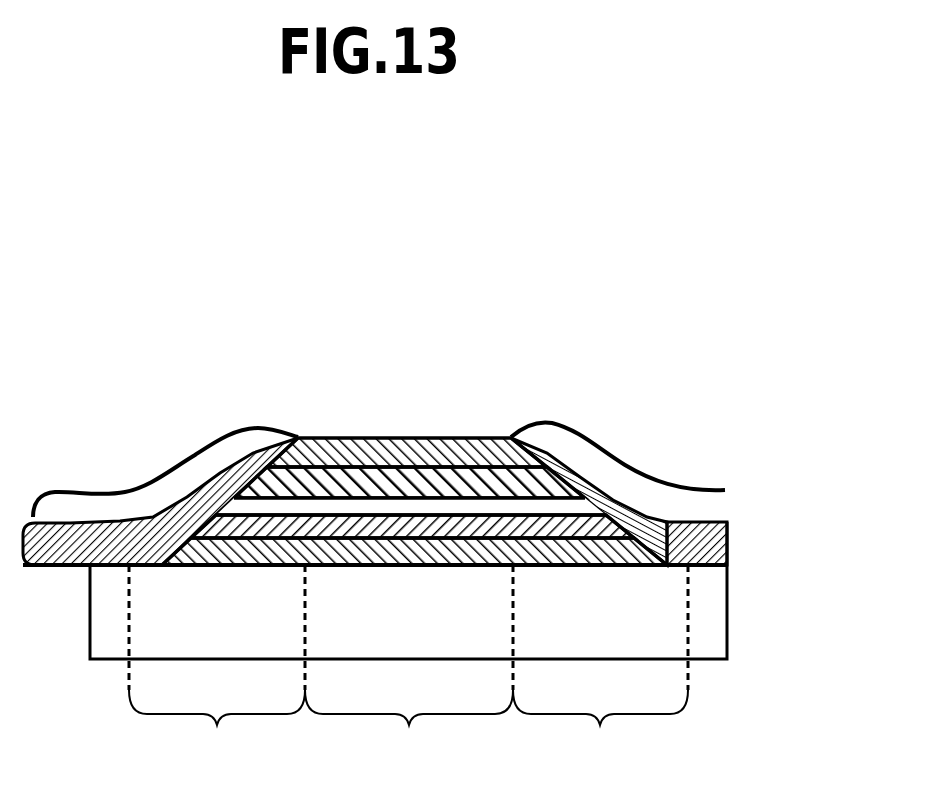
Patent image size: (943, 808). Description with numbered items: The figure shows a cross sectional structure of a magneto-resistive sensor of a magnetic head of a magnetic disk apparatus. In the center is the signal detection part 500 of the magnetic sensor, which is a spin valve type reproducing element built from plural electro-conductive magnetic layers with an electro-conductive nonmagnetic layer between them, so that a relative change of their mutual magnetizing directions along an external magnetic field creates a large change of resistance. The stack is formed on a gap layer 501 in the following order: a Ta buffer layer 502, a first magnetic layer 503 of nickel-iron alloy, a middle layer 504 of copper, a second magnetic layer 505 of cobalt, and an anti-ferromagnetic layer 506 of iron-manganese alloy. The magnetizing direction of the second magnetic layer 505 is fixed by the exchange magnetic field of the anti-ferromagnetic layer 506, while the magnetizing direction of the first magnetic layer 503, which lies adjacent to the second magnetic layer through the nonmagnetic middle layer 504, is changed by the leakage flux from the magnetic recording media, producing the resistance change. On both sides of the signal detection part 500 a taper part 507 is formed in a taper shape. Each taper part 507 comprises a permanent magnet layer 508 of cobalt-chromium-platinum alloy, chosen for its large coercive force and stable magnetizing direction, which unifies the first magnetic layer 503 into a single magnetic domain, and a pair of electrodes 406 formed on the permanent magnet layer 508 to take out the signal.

The pair of electrodes 406 is at (213, 470).
The signal detection part 500 is at (409, 729).
The gap layer 501 is at (707, 610).
The Ta buffer layer 502 is at (447, 543).
The first magnetic layer 503 is at (417, 527).
The middle layer 504 is at (368, 500).
The second magnetic layer 505 is at (343, 470).
The anti-ferromagnetic layer 506 is at (327, 435).
The taper part 507 is at (408, 667).
The permanent magnet layer 508 is at (177, 508).